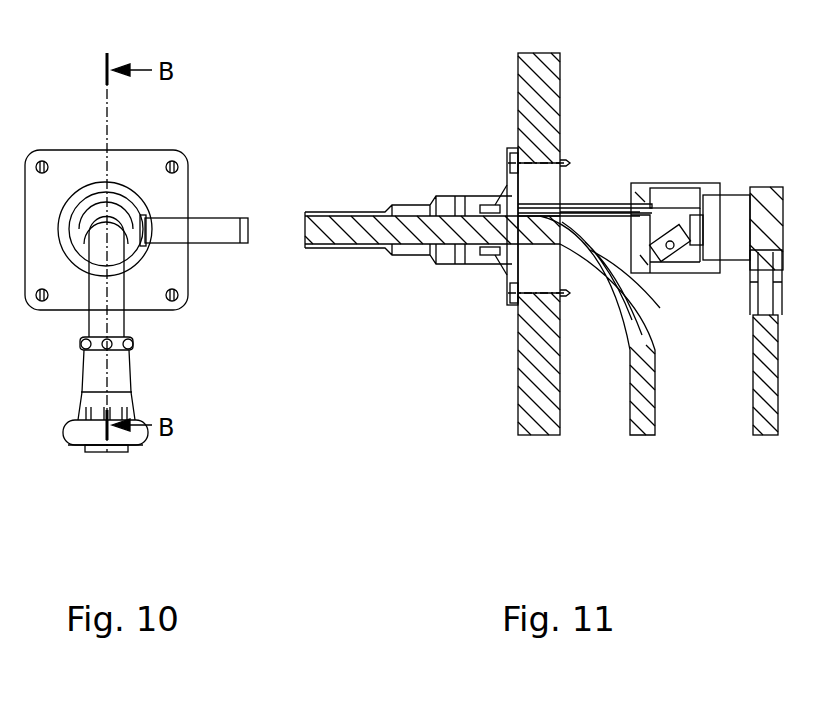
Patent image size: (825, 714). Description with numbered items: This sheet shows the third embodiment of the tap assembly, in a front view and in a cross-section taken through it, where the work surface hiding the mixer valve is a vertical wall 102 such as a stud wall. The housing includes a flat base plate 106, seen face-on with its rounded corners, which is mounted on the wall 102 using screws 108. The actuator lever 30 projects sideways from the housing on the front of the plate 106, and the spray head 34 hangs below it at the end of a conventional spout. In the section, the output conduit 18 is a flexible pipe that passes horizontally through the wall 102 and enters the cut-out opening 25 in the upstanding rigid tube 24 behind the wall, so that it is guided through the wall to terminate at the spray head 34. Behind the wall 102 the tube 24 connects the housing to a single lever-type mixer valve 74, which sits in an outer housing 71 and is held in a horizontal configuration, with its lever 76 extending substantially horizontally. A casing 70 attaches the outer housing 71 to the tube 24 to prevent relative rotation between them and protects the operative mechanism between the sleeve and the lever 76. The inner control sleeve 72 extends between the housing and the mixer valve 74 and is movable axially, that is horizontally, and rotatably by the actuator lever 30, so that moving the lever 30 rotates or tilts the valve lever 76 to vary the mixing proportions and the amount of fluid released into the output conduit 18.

In FIG. 11, the output conduit 18 is at (373, 230).
In FIG. 11, the upstanding rigid tube 24 is at (598, 206).
In FIG. 11, the cut-out opening 25 is at (661, 315).
In FIG. 10, the actuator lever 30 is at (205, 228).
In FIG. 10, the spray head 34 is at (80, 401).
In FIG. 11, the casing 70 is at (663, 183).
In FIG. 11, the outer housing 71 is at (763, 188).
In FIG. 11, the inner control sleeve 72 is at (575, 207).
In FIG. 11, the mixer valve 74 is at (728, 197).
In FIG. 11, the lever 76 is at (672, 267).
In FIG. 11, the vertical wall 102 is at (550, 62).
In FIG. 10, the flat base plate 106 is at (82, 165).
In FIG. 11, the flat base plate 106 is at (513, 150).
In FIG. 11, the screws 108 is at (510, 163).